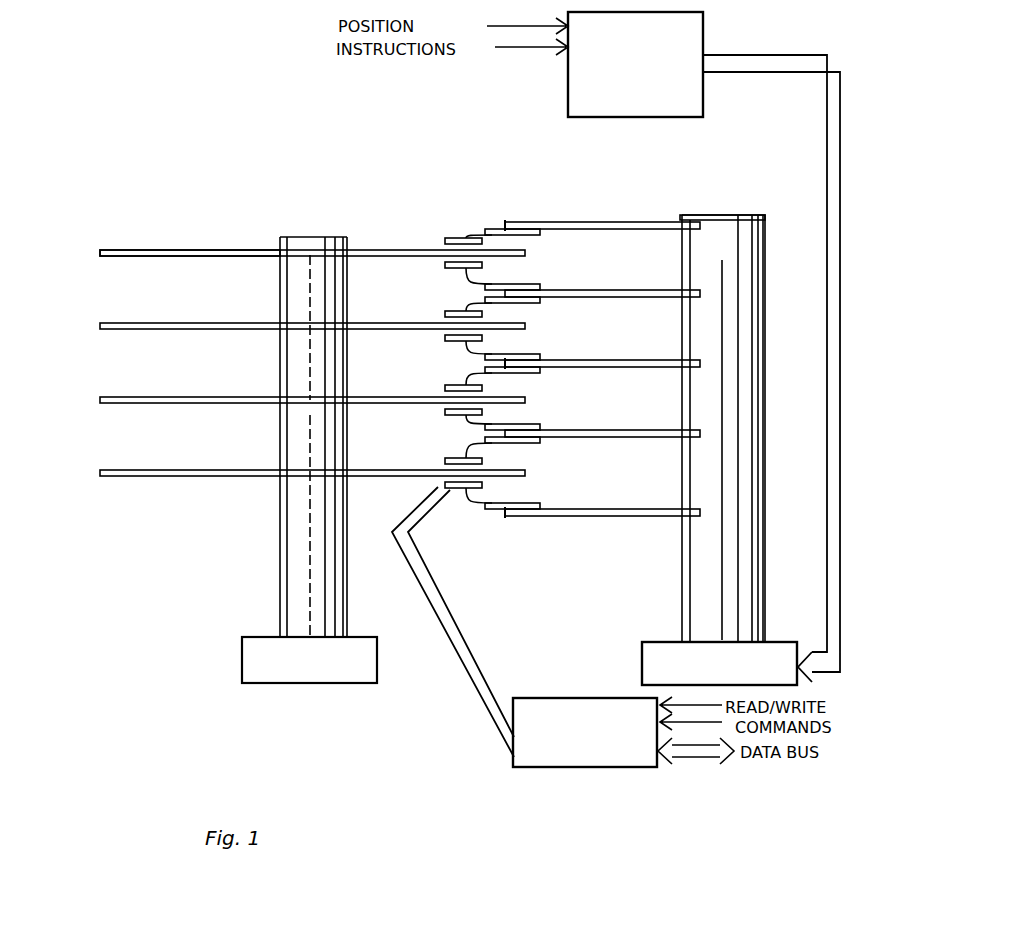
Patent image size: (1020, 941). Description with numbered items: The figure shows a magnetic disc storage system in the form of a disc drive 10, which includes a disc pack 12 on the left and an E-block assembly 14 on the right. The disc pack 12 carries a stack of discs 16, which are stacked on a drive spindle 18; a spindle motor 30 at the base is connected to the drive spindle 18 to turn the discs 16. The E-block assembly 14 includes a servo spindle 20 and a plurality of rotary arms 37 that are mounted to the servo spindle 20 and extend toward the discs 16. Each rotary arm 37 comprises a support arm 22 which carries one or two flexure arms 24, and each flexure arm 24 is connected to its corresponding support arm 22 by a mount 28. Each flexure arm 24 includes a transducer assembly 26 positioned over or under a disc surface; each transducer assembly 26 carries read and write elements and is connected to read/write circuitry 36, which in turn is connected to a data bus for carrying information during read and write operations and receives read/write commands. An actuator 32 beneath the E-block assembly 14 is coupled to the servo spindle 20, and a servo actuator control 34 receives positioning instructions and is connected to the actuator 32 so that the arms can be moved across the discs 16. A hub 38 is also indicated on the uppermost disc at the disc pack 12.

The disc drive 10 is at (131, 706).
The disc pack 12 is at (117, 224).
The E-block assembly 14 is at (736, 195).
The discs 16 is at (105, 255).
The drive spindle 18 is at (297, 237).
The servo spindle 20 is at (688, 545).
The support arm 22 is at (612, 229).
The flexure arm 24 is at (466, 238).
The transducer assembly 26 is at (446, 240).
The mount 28 is at (536, 234).
The spindle motor 30 is at (242, 655).
The actuator 32 is at (642, 652).
The servo actuator control 34 is at (600, 117).
The read/write circuitry 36 is at (572, 698).
The rotary arm 37 is at (574, 222).
The hub 38 is at (187, 250).